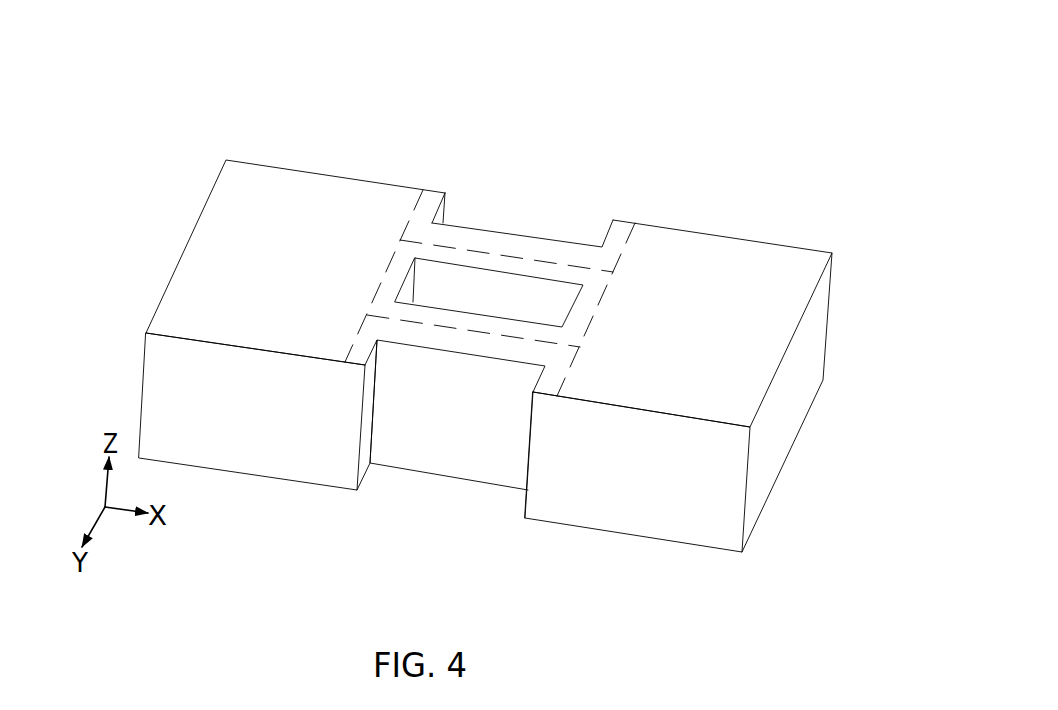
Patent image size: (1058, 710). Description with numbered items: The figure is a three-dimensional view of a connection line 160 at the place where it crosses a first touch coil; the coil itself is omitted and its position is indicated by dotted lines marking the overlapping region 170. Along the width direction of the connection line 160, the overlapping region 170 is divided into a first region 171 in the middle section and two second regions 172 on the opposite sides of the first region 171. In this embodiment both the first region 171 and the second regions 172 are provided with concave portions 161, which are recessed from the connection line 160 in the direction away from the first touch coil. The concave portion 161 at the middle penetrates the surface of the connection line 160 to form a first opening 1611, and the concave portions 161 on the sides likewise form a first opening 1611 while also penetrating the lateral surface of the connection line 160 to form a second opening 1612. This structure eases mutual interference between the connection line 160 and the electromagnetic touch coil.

The connection line 160 is at (190, 60).
The concave portion 161 is at (495, 215).
The first opening 1611 is at (570, 283).
The second opening 1612 is at (528, 462).
The overlapping region 170 is at (150, 160).
The first region 171 is at (387, 273).
The second region 172 is at (413, 220).